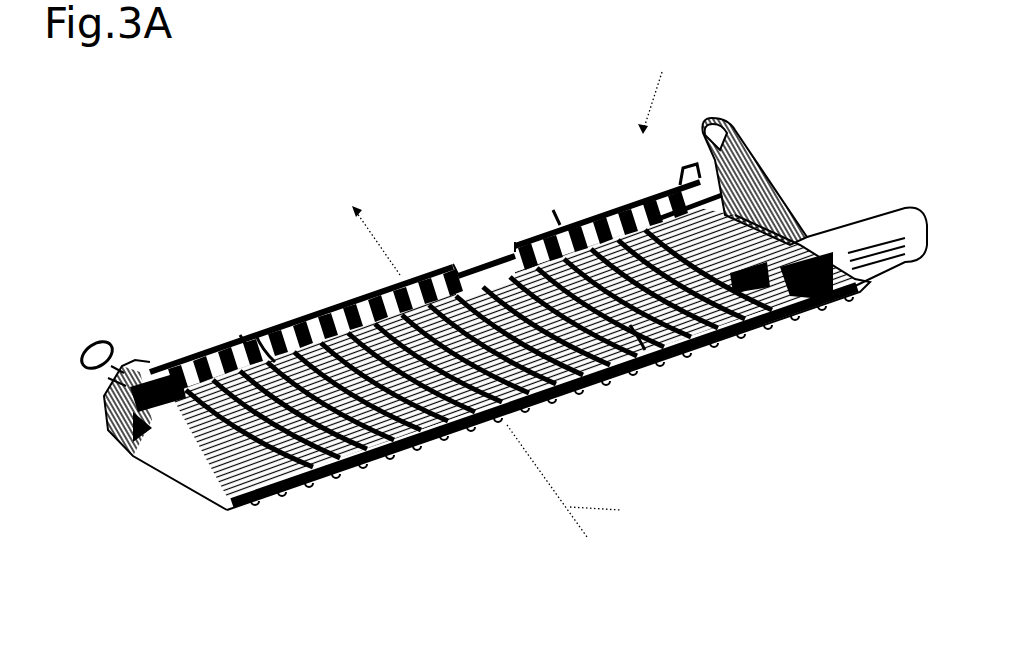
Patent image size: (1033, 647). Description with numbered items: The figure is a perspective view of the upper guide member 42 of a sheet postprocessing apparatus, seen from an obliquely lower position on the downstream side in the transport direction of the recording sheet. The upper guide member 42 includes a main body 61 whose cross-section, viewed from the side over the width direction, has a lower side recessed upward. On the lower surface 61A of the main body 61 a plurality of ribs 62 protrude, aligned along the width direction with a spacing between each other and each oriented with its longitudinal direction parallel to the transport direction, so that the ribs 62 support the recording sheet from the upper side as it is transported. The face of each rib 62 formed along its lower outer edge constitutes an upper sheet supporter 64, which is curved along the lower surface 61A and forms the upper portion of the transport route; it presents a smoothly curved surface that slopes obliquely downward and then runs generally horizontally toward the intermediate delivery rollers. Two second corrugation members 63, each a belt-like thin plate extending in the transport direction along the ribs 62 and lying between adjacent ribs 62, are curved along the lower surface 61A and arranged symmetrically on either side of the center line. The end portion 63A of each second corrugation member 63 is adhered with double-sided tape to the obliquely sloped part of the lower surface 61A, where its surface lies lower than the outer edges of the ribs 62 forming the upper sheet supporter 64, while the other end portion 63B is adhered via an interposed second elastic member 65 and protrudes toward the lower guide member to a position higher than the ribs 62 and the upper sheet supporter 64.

The upper guide member 42 is at (502, 302).
The main body 61 is at (777, 322).
The lower surface 61A is at (235, 400).
The ribs 62 is at (228, 510).
The second corrugation members 63 is at (287, 377).
The end portion 63A is at (637, 327).
The other end portion 63B is at (255, 333).
The upper sheet supporter 64 is at (340, 480).
The second elastic member 65 is at (238, 365).